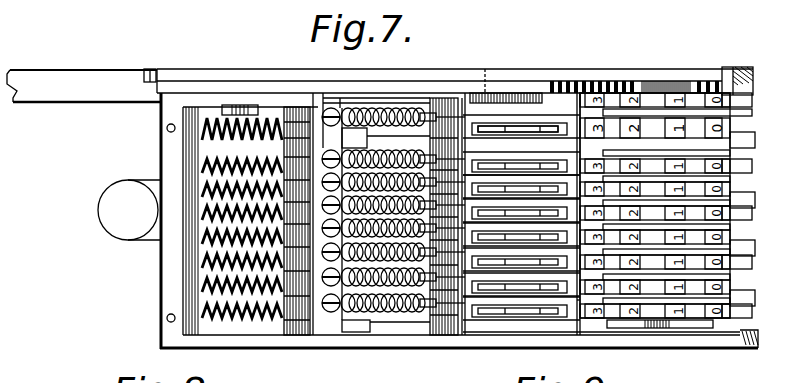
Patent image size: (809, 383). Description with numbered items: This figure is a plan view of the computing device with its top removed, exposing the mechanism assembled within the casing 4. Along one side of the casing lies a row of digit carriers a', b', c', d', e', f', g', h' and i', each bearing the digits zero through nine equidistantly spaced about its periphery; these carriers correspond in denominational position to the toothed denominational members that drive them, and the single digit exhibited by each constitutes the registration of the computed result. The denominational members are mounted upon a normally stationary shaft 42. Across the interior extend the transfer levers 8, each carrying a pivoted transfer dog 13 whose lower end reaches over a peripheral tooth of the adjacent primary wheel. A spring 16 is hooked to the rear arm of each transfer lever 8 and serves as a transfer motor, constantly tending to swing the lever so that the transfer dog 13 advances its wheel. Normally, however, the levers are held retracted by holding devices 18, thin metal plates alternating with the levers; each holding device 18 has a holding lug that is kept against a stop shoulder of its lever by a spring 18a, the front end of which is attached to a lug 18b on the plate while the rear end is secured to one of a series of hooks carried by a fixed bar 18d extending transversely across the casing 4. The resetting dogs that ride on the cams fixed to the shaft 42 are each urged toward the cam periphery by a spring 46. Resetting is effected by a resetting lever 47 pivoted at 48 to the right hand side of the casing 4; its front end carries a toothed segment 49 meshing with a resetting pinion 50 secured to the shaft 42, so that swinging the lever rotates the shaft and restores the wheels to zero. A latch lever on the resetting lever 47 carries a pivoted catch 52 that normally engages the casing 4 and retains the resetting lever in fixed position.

The casing 4 is at (255, 69).
The resetting lever 47 is at (73, 70).
The pivoted catch 52 is at (151, 69).
The pivot 48 is at (485, 69).
The toothed segment 49 is at (563, 80).
The shaft 42 is at (646, 79).
The resetting pinion 50 is at (678, 77).
The spring 16 is at (253, 162).
The transfer lever 8 is at (486, 136).
The transfer dog 13 is at (531, 130).
The spring 18a is at (386, 108).
The lug 18b is at (432, 114).
The fixed bar 18d is at (354, 328).
The holding device 18 is at (574, 300).
The spring 46 is at (701, 329).
The digit carrier a' is at (654, 104).
The digit carrier b' is at (654, 134).
The digit carrier c' is at (676, 161).
The digit carrier d' is at (677, 192).
The digit carrier e' is at (677, 210).
The digit carrier f' is at (676, 240).
The digit carrier g' is at (677, 260).
The digit carrier h' is at (680, 290).
The digit carrier i' is at (677, 309).